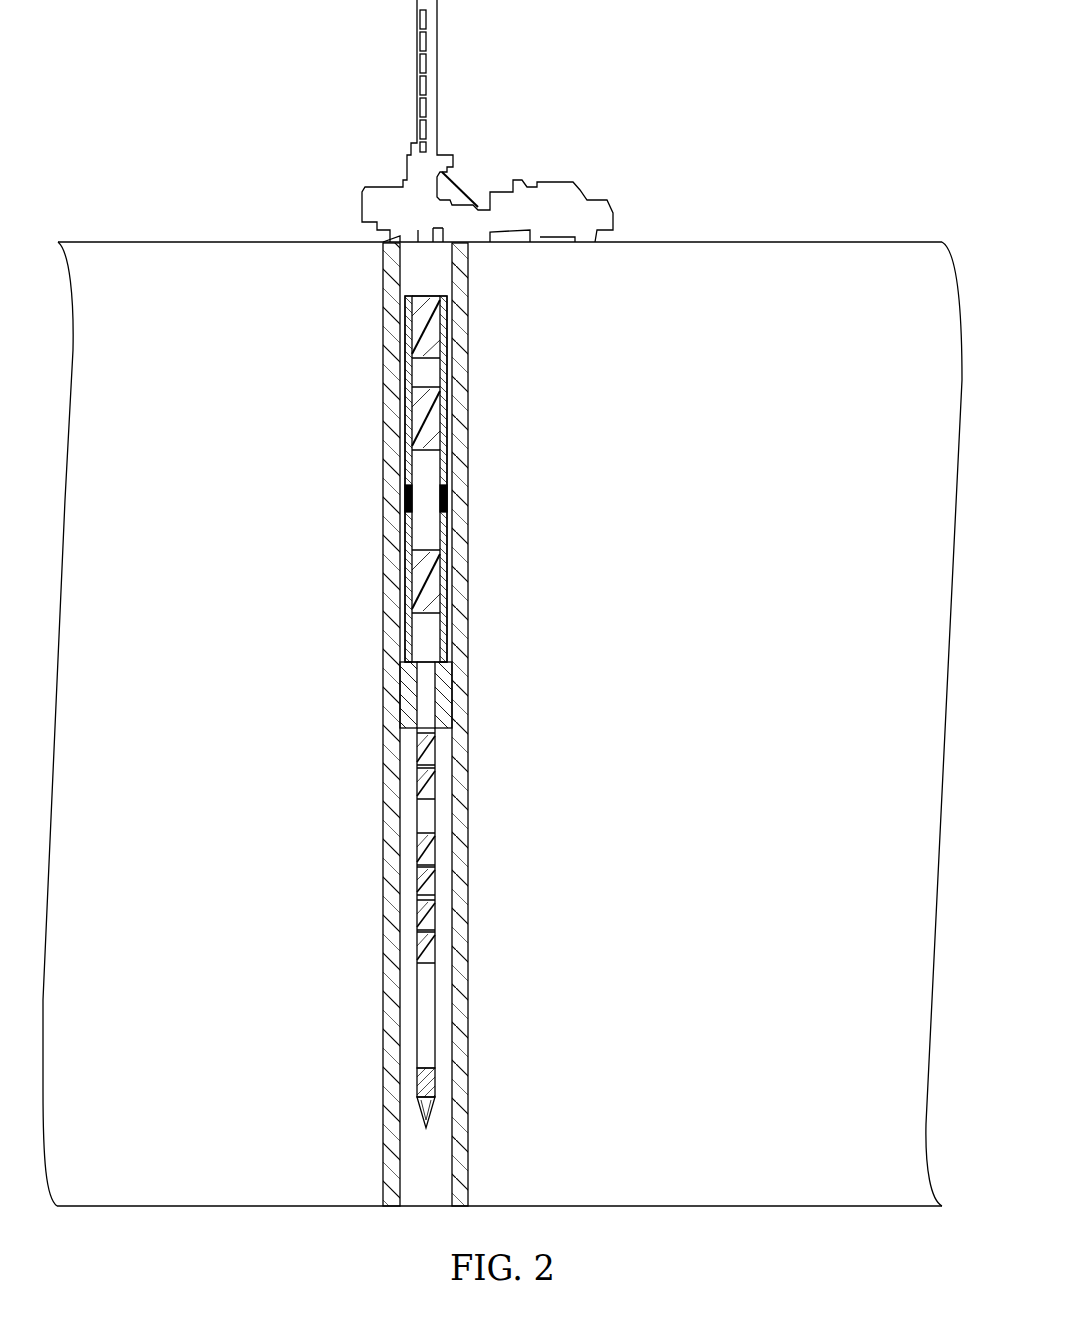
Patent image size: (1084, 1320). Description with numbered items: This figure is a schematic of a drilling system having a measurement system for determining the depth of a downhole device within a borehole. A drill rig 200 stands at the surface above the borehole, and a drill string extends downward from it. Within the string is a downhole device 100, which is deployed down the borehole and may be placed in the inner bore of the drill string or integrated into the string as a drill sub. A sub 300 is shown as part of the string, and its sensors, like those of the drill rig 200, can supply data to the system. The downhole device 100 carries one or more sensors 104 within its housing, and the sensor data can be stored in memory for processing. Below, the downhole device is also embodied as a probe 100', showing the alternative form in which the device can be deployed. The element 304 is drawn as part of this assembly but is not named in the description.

The drill rig 200 is at (437, 68).
The downhole device 100 is at (460, 479).
The sub 300 is at (447, 502).
The connector sub 304 is at (408, 693).
The sensors 104 is at (468, 841).
The probe 100' is at (407, 924).